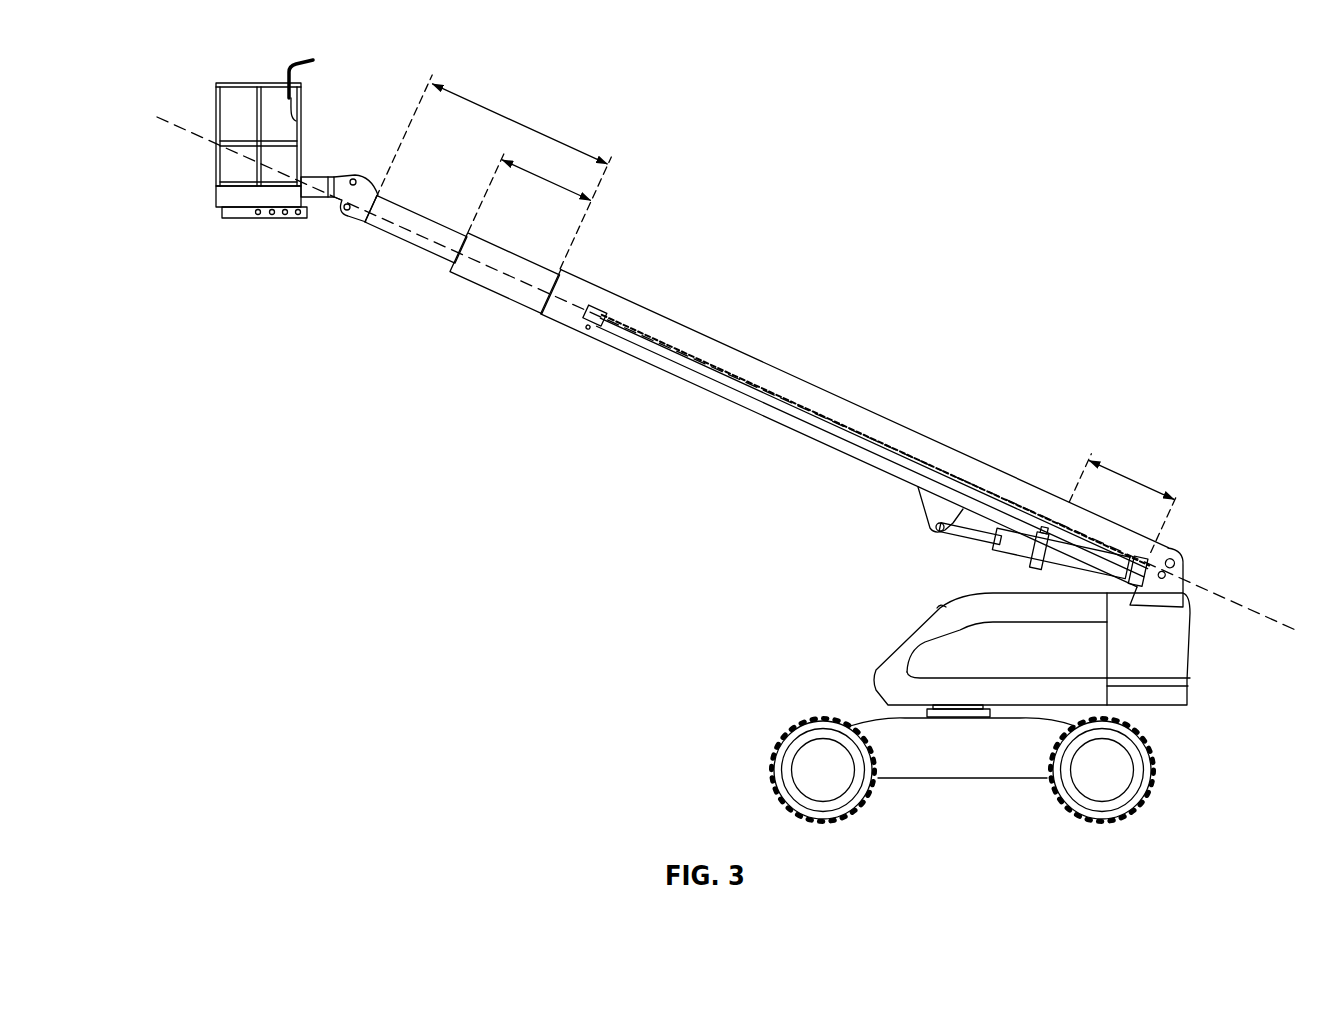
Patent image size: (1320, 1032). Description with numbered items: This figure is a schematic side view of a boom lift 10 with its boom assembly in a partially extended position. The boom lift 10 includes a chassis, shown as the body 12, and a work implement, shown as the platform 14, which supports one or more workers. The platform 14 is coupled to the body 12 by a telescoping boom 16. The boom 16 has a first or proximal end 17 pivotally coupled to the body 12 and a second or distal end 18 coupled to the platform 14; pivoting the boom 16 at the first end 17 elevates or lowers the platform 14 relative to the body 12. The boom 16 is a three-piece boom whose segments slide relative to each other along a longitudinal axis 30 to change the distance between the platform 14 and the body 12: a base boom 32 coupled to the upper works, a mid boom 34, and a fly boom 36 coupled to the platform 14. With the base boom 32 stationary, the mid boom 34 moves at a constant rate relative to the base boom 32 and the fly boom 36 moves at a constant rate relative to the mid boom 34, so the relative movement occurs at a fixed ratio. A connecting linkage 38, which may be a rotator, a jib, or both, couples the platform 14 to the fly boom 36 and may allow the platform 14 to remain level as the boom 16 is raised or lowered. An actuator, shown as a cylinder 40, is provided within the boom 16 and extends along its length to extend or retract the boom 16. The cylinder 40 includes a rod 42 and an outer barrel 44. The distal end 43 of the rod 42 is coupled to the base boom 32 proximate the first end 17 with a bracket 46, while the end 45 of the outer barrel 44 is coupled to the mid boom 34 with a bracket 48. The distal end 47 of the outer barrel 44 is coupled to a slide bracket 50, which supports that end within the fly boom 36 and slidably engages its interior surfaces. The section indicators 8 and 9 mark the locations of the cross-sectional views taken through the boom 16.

The boom lift 10 is at (745, 90).
The body 12 is at (865, 643).
The platform 14 is at (236, 220).
The boom 16 is at (744, 401).
The first end 17 is at (1199, 627).
The second end 18 is at (367, 249).
The longitudinal axis 30 is at (156, 115).
The base boom 32 is at (727, 404).
The mid boom 34 is at (497, 294).
The fly boom 36 is at (425, 257).
The connecting linkage 38 is at (318, 175).
The cylinder 40 is at (896, 436).
The rod 42 is at (1093, 554).
The distal end 43 is at (1092, 575).
The outer barrel 44 is at (875, 454).
The end 45 is at (982, 503).
The bracket 46 is at (1143, 588).
The distal end 47 is at (658, 352).
The bracket 48 is at (1037, 538).
The slide bracket 50 is at (587, 330).
The section line 8 is at (966, 462).
The section line 9 is at (520, 260).